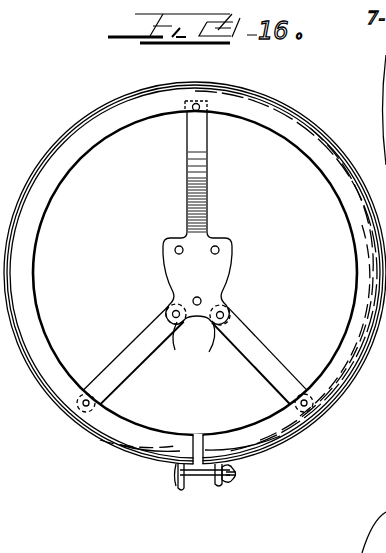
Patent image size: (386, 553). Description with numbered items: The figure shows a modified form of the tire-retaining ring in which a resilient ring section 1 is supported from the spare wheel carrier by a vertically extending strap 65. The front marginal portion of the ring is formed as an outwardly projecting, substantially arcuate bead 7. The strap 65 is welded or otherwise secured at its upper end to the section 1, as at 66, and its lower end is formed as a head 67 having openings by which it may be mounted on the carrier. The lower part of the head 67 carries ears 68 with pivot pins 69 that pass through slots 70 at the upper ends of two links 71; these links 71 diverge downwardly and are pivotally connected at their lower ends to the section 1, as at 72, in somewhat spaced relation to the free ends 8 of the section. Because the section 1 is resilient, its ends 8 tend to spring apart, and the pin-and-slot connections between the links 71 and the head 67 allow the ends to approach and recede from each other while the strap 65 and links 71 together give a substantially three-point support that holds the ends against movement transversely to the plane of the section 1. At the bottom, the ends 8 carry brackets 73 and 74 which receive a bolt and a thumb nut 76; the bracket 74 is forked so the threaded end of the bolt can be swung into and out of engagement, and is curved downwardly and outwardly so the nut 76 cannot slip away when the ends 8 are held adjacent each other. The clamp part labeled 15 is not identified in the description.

The section 1 is at (53, 222).
The bead 7 is at (46, 157).
The ends 8 is at (217, 437).
The clamp bracket 15 is at (174, 483).
The strap 65 is at (199, 161).
The welded connection 66 is at (211, 108).
The head 67 is at (215, 278).
The ears 68 is at (189, 336).
The pivot pins 69 is at (197, 346).
The slots 70 is at (168, 308).
The links 71 is at (252, 352).
The pivotal connections 72 is at (84, 406).
The bracket 73 is at (182, 489).
The bracket 74 is at (221, 486).
The thumb nut 76 is at (232, 480).